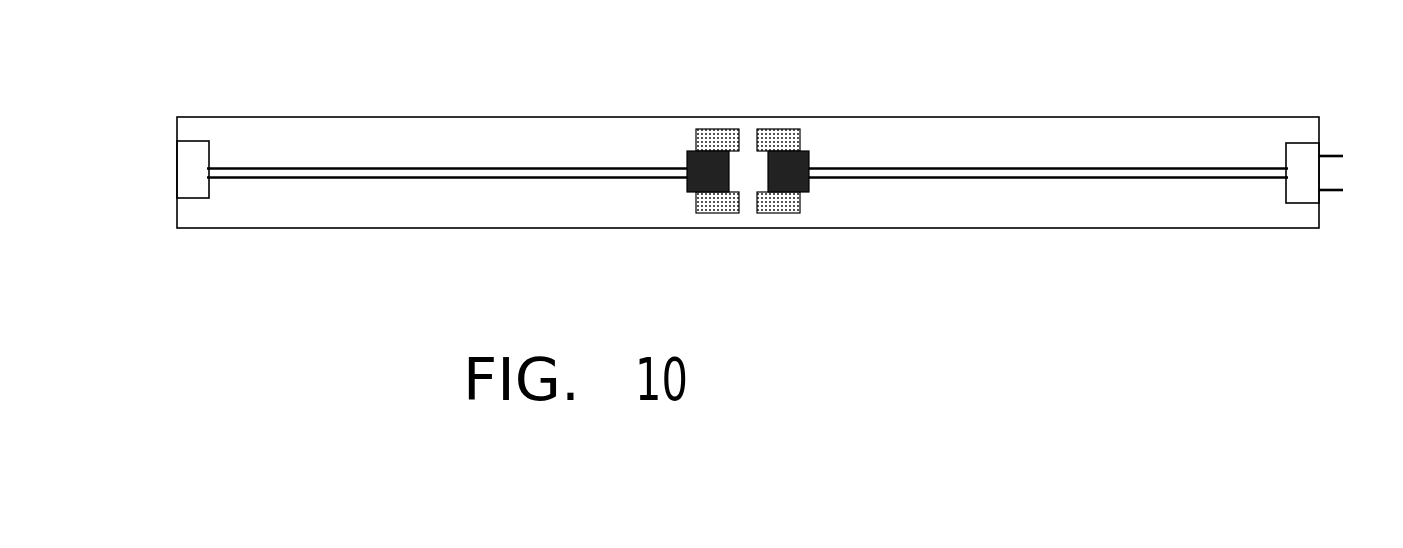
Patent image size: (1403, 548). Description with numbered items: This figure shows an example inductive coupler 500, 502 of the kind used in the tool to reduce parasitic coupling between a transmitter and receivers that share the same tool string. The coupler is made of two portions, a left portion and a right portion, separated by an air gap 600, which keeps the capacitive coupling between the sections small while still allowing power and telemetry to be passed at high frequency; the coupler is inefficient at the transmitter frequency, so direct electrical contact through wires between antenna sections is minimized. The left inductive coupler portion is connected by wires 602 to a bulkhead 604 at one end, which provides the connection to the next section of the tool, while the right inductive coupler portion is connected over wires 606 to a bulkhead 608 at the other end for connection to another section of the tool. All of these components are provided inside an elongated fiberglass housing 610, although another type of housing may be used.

The inductive coupler 500 is at (720, 135).
The inductive coupler 502 is at (790, 135).
The air gap 600 is at (757, 164).
The wires 602 is at (410, 160).
The bulkhead 604 is at (202, 148).
The wires 606 is at (988, 160).
The bulkhead 608 is at (1305, 168).
The fiberglass housing 610 is at (918, 210).